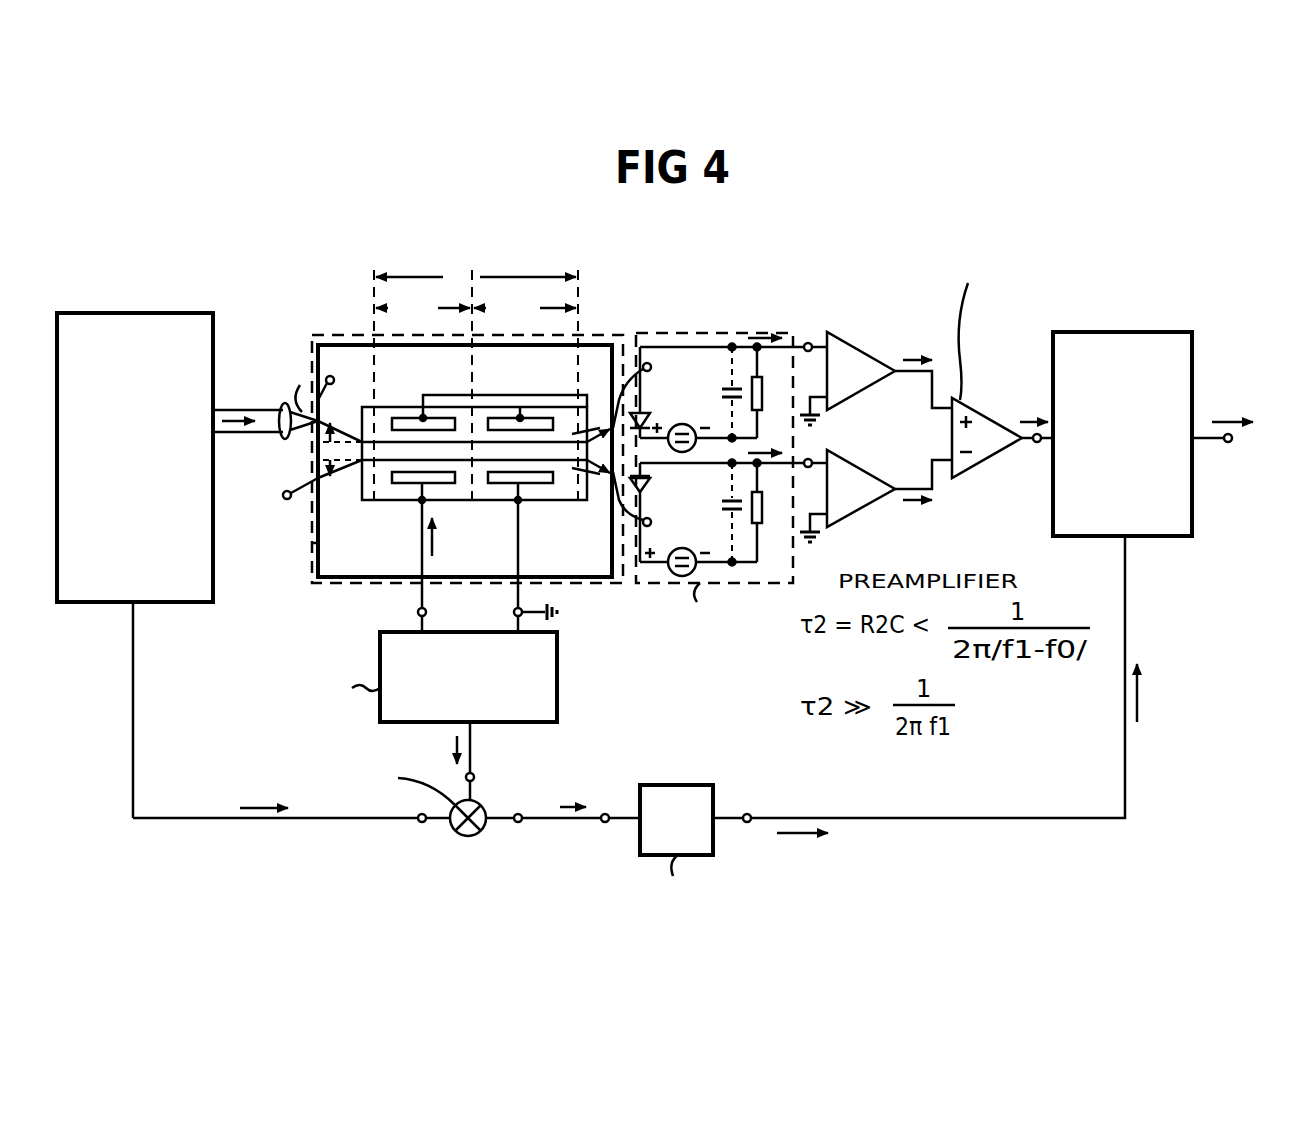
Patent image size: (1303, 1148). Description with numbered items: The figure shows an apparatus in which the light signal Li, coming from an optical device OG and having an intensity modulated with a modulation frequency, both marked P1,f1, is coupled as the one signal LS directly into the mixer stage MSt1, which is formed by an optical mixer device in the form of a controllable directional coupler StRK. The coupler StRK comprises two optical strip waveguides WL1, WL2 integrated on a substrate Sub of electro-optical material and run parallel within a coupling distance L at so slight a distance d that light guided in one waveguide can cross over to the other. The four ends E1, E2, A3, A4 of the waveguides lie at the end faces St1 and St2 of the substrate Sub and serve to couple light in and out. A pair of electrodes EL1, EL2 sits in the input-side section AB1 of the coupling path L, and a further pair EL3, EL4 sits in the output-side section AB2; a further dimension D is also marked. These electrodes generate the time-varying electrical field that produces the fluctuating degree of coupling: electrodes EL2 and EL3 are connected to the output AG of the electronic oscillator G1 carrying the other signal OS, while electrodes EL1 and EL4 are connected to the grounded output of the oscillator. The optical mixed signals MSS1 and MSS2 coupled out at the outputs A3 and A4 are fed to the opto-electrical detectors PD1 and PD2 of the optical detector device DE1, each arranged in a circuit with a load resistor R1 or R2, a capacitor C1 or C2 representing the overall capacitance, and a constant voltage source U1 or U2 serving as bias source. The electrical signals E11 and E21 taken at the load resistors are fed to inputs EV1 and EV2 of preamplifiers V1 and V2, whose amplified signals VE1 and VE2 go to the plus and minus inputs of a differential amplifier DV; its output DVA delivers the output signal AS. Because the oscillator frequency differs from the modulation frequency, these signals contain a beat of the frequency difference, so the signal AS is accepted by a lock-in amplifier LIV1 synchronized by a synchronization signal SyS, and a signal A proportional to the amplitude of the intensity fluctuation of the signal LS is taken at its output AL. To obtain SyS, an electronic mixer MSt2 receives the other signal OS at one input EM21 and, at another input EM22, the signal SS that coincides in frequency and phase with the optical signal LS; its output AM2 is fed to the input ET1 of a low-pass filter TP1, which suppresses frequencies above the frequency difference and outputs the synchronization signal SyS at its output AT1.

The optical device OG is at (122, 313).
The light intensity and modulation frequency P1,f1 is at (248, 402).
The light signal Li is at (300, 395).
The one signal LS is at (282, 440).
The mixer stage MSt1 is at (347, 335).
The substrate Sub is at (352, 578).
The end face St1 is at (312, 543).
The coupling distance L is at (476, 384).
The input-side section AB1 is at (424, 387).
The second electrode section AB2 is at (525, 310).
The electrode gap D is at (470, 407).
The electrode EL1 is at (412, 418).
The electrode EL2 is at (405, 483).
The electrode EL3 is at (517, 410).
The electrode EL4 is at (527, 483).
The optical strip waveguide WL1 is at (468, 442).
The optical strip waveguide WL2 is at (460, 483).
The waveguide end E1 is at (342, 384).
The waveguide end E2 is at (285, 494).
The waveguide distance d is at (329, 472).
The other signal OS is at (449, 549).
The mixed signal MSS1 is at (605, 425).
The mixed signal MSS2 is at (614, 500).
The optical directional coupler StRK is at (612, 346).
The end face St2 is at (627, 345).
The oscillator output AG is at (440, 557).
The optical detector device DE1 is at (726, 333).
The opto-electrical detector PD1 is at (653, 392).
The opto-electrical detector PD2 is at (657, 512).
The optical output A3 is at (648, 392).
The optical output A4 is at (648, 503).
The constant voltage source U1 is at (698, 399).
The constant voltage source U2 is at (698, 519).
The capacitor C1 is at (727, 387).
The capacitor C2 is at (718, 513).
The load resistor R1 is at (772, 391).
The load resistor R2 is at (772, 511).
The electrical signal E11 is at (776, 334).
The electrical signal E21 is at (800, 450).
The preamplifier input EV1 is at (808, 343).
The preamplifier input EV2 is at (812, 464).
The preamplifier V1 is at (860, 355).
The preamplifier V2 is at (848, 525).
The amplified signal VE1 is at (923, 369).
The amplified signal VE2 is at (923, 499).
The differential amplifier DV is at (968, 418).
The differential amplifier output DVA is at (1037, 443).
The output signal AS is at (1035, 413).
The lock-in amplifier LIV1 is at (1130, 332).
The signal A is at (1222, 413).
The lock-in amplifier output AL is at (1247, 452).
The synchronization signal SyS is at (968, 703).
The electronic oscillator G1 is at (557, 670).
The mixer input EM21 is at (480, 761).
The mixer input EM22 is at (423, 822).
The mixer output AM2 is at (518, 822).
The electronic mixer MSt2 is at (465, 836).
The electrical signal SS is at (275, 798).
The low-pass filter input ET1 is at (606, 814).
The low-pass filter TP1 is at (677, 840).
The low-pass filter output AT1 is at (741, 802).